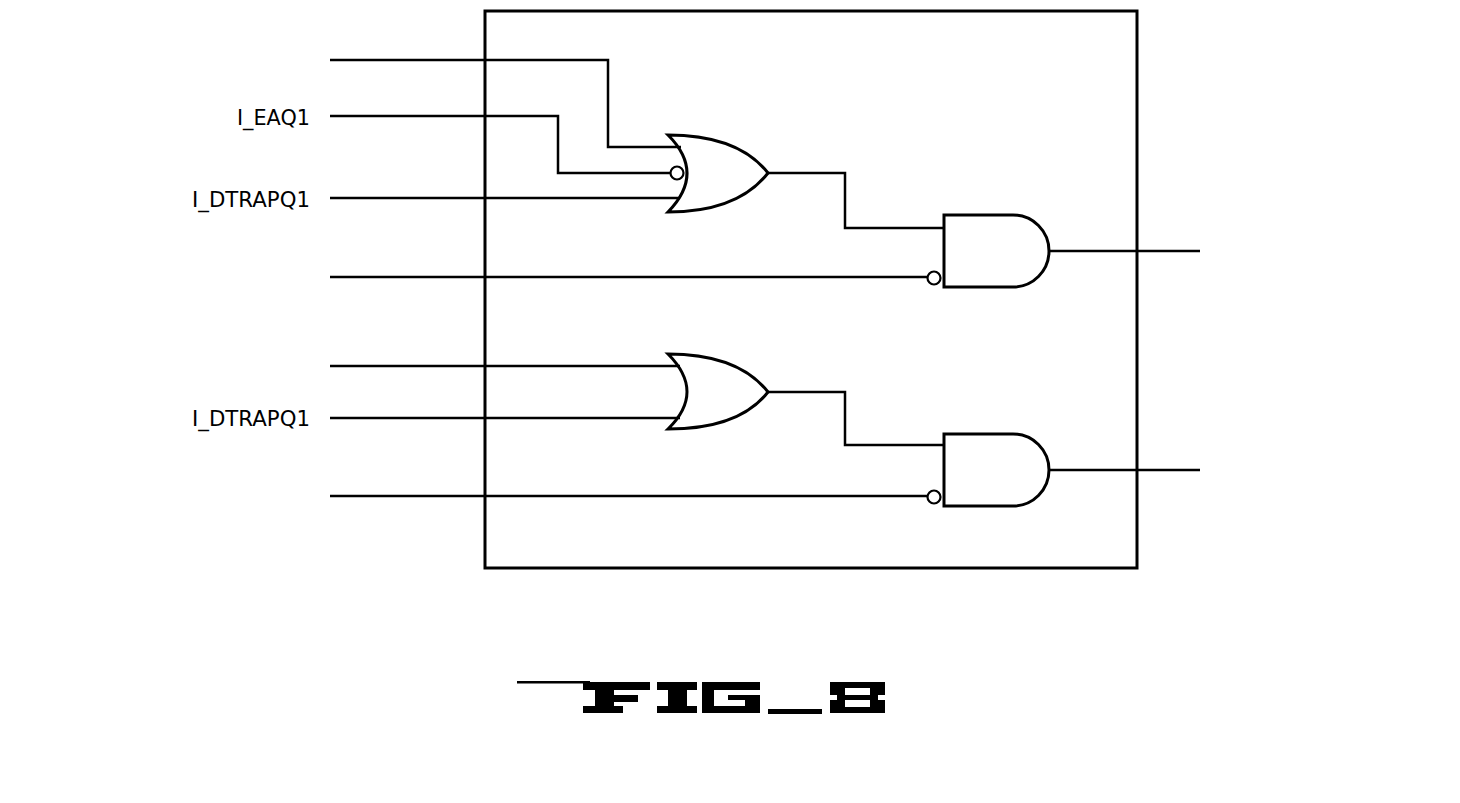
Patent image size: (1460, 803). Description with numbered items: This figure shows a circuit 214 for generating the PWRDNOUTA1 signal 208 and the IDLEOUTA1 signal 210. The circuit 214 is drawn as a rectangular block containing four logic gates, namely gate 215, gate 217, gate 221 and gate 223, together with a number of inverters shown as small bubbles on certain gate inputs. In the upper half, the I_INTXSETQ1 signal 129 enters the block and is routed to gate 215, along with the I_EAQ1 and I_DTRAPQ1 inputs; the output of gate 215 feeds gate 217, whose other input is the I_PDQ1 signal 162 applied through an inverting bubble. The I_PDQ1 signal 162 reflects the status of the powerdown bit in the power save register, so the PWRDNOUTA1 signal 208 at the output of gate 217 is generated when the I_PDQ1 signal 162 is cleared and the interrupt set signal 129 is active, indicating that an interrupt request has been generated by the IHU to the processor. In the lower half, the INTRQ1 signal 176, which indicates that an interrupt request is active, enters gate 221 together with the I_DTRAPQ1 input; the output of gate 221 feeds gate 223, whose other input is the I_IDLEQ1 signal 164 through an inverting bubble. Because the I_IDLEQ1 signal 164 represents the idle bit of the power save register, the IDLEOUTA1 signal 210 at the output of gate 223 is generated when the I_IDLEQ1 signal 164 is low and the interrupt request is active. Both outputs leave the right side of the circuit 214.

The I_INTXSETQ1 signal 129 is at (160, 61).
The I_PDQ1 signal 162 is at (220, 278).
The INTRQ1 signal 176 is at (198, 365).
The I_IDLEQ1 signal 164 is at (203, 492).
The PWRDNOUTA1 signal 208 is at (1348, 231).
The IDLEOUTA1 signal 210 is at (1318, 449).
The circuit 214 is at (1024, 83).
The gate 215 is at (697, 188).
The gate 217 is at (969, 266).
The gate 221 is at (697, 406).
The gate 223 is at (969, 484).